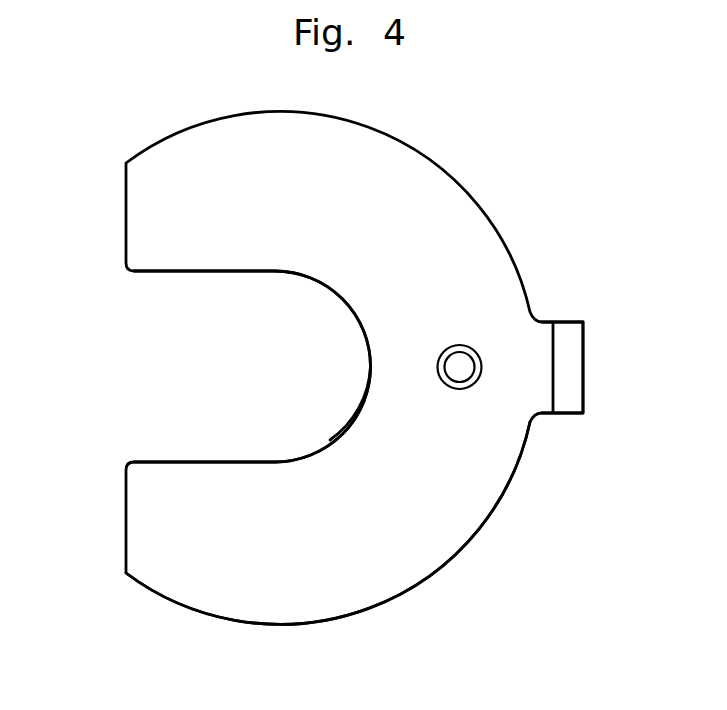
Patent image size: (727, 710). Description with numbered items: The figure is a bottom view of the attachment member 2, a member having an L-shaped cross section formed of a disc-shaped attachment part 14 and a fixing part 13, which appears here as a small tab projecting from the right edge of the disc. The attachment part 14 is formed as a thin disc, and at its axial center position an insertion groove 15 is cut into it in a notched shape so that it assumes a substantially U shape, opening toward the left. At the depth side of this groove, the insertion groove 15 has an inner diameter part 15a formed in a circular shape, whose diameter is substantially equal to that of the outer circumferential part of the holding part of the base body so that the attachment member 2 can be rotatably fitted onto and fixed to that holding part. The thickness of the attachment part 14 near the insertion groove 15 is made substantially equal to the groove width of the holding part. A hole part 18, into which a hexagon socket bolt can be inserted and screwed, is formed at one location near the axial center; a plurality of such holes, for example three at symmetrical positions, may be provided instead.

The attachment member 2 is at (594, 203).
The fixing part 13 is at (568, 372).
The attachment part 14 is at (442, 483).
The insertion groove 15 is at (178, 458).
The inner diameter part 15a is at (366, 394).
The hole part 18 is at (462, 368).